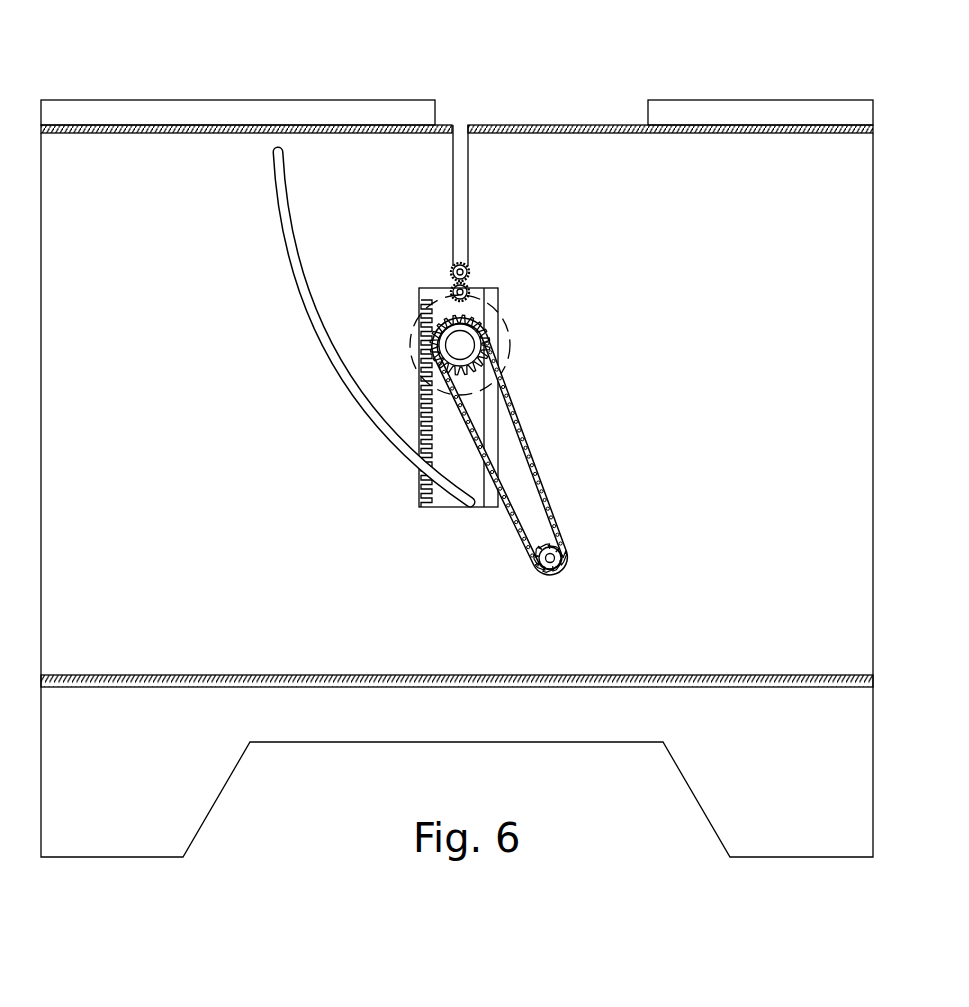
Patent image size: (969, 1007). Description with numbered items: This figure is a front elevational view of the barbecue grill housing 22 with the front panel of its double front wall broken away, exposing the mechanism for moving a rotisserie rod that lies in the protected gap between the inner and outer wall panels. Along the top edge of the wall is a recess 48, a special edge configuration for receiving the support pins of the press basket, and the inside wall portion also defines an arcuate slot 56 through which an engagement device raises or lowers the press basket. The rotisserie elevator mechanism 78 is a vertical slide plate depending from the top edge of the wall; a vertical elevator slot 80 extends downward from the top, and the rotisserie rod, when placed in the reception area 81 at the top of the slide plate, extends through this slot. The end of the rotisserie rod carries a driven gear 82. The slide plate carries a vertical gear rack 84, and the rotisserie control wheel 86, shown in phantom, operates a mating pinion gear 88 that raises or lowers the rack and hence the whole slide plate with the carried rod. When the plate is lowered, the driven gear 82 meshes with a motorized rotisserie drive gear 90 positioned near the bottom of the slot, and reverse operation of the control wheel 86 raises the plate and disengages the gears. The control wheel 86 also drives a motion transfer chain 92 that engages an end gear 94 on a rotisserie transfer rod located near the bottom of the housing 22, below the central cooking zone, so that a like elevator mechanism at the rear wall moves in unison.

The housing 22 is at (826, 133).
The recess 48 is at (575, 125).
The arcuate slot 56 is at (286, 243).
The elevator mechanism 78 is at (495, 288).
The elevator slot 80 is at (455, 187).
The reception area 81 is at (449, 292).
The driven gear 82 is at (470, 266).
The gear rack 84 is at (418, 485).
The control wheel 86 is at (412, 350).
The pinion gear 88 is at (482, 340).
The rotisserie drive gear 90 is at (480, 300).
The motion transfer chain 92 is at (530, 465).
The end gear 94 is at (556, 558).